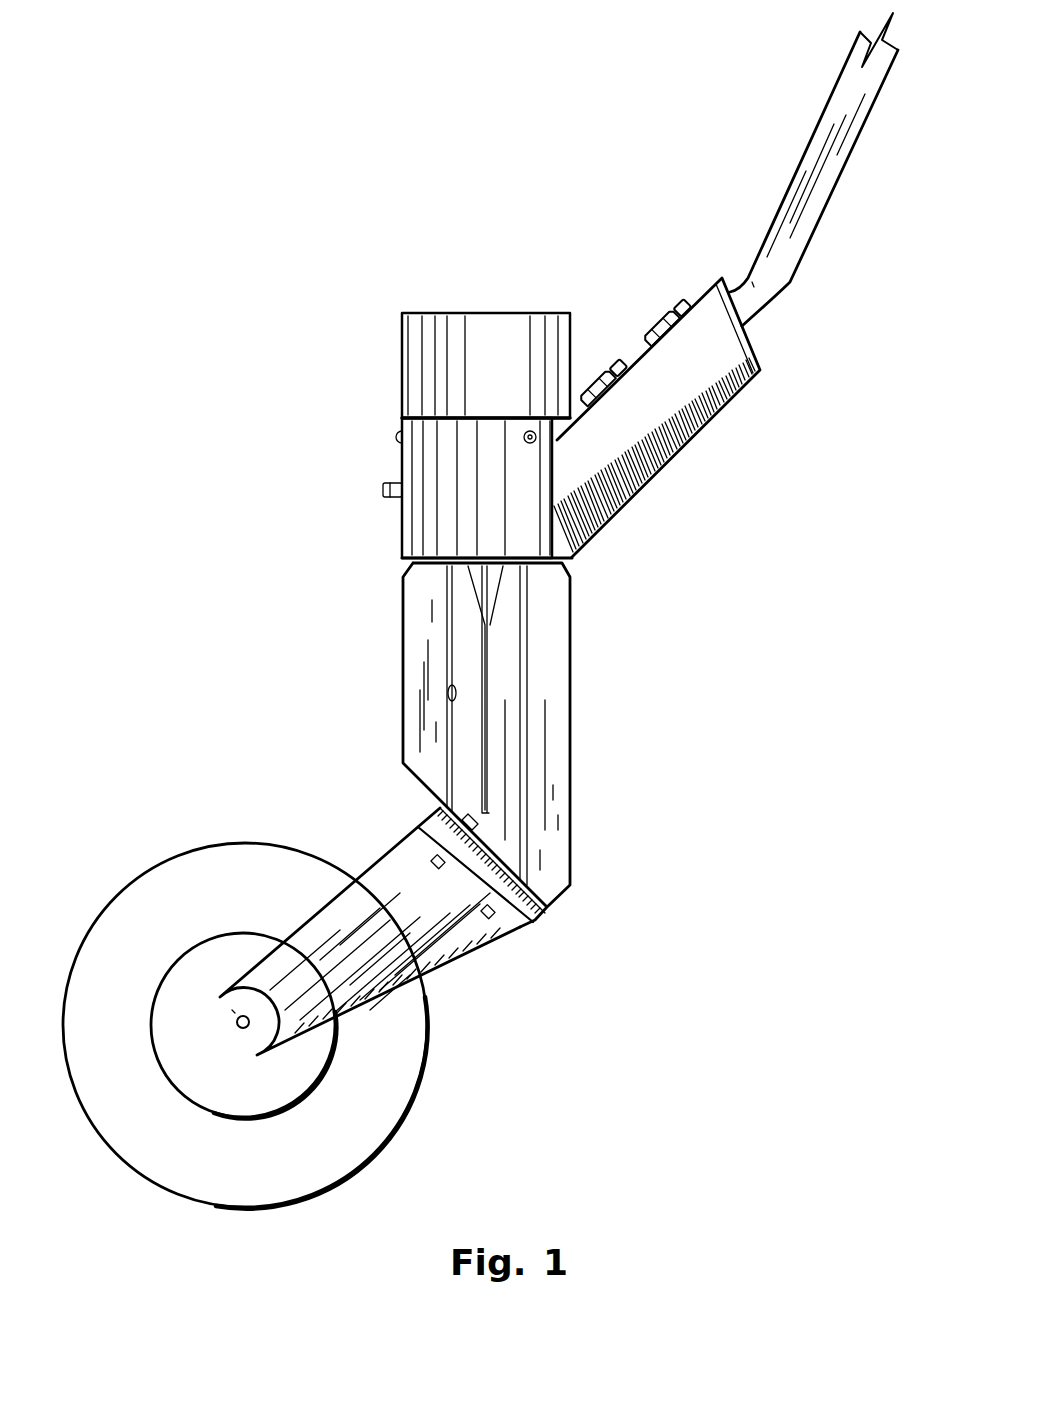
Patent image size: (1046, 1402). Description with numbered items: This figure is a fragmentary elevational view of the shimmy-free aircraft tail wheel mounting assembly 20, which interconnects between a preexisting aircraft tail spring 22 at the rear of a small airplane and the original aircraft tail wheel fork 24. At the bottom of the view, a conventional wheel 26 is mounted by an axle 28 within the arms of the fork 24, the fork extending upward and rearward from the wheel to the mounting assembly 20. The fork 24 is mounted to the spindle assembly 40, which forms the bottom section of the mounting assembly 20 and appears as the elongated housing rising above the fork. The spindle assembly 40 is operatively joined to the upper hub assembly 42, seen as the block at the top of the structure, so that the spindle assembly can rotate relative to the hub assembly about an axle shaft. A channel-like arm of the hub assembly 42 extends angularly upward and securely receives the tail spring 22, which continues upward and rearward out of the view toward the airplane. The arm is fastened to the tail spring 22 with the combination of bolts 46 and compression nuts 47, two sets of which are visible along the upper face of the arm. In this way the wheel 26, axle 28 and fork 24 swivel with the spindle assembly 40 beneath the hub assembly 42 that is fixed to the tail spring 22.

The tail wheel mounting assembly 20 is at (392, 393).
The aircraft tail spring 22 is at (843, 167).
The tail wheel fork 24 is at (463, 945).
The wheel 26 is at (425, 1030).
The axle 28 is at (247, 1026).
The spindle assembly 40 is at (583, 807).
The upper hub assembly 42 is at (392, 353).
The bolts 46 is at (597, 360).
The compression nuts 47 is at (628, 357).